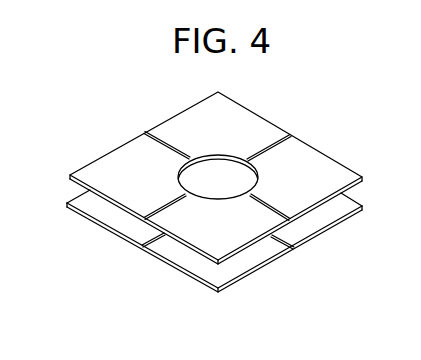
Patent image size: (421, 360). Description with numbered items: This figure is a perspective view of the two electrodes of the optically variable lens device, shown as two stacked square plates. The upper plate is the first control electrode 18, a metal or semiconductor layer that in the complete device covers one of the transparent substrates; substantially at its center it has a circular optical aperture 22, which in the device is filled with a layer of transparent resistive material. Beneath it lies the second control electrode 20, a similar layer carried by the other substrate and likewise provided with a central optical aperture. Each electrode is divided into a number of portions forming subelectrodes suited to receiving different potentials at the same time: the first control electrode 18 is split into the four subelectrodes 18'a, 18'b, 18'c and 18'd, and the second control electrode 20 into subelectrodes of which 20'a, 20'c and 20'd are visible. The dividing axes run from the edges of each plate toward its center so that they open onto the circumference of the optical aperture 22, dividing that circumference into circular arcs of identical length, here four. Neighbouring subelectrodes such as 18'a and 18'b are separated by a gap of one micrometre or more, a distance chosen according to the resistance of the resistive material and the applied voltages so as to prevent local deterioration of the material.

The control electrode 18 is at (216, 174).
The subelectrode 18'a is at (104, 177).
The subelectrode 18'b is at (164, 115).
The subelectrode 18'c is at (310, 132).
The subelectrode 18'd is at (262, 258).
The control electrode 20 is at (214, 252).
The subelectrode 20'a is at (106, 239).
The subelectrode 20'c is at (331, 244).
The subelectrode 20'd is at (209, 305).
The optical aperture 22 is at (220, 170).